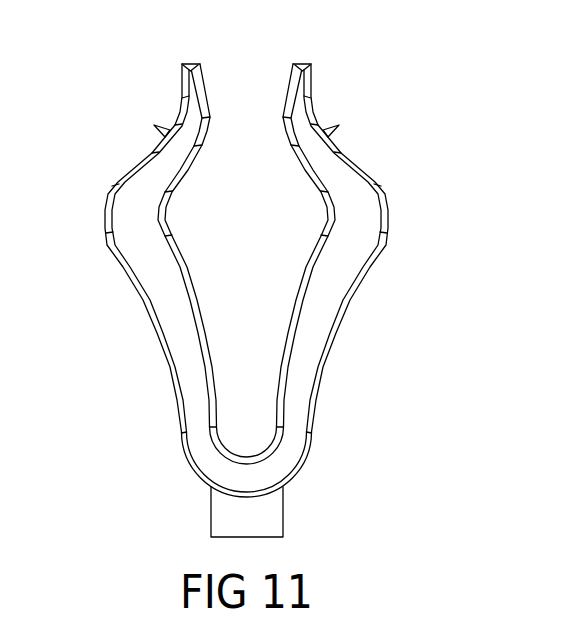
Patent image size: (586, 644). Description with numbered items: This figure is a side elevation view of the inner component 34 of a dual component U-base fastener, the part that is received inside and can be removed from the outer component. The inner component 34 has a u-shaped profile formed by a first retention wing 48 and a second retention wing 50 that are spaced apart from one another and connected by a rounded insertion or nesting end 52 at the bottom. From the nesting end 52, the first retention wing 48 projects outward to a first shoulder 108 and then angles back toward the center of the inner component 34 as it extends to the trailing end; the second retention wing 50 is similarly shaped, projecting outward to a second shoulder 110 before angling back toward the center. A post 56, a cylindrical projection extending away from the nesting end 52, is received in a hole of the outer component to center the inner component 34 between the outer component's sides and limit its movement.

The inner component 34 is at (118, 64).
The first shoulder 108 is at (105, 207).
The second shoulder 110 is at (391, 207).
The first retention wing 48 is at (185, 347).
The second retention wing 50 is at (306, 343).
The nesting end 52 is at (273, 465).
The post 56 is at (228, 513).